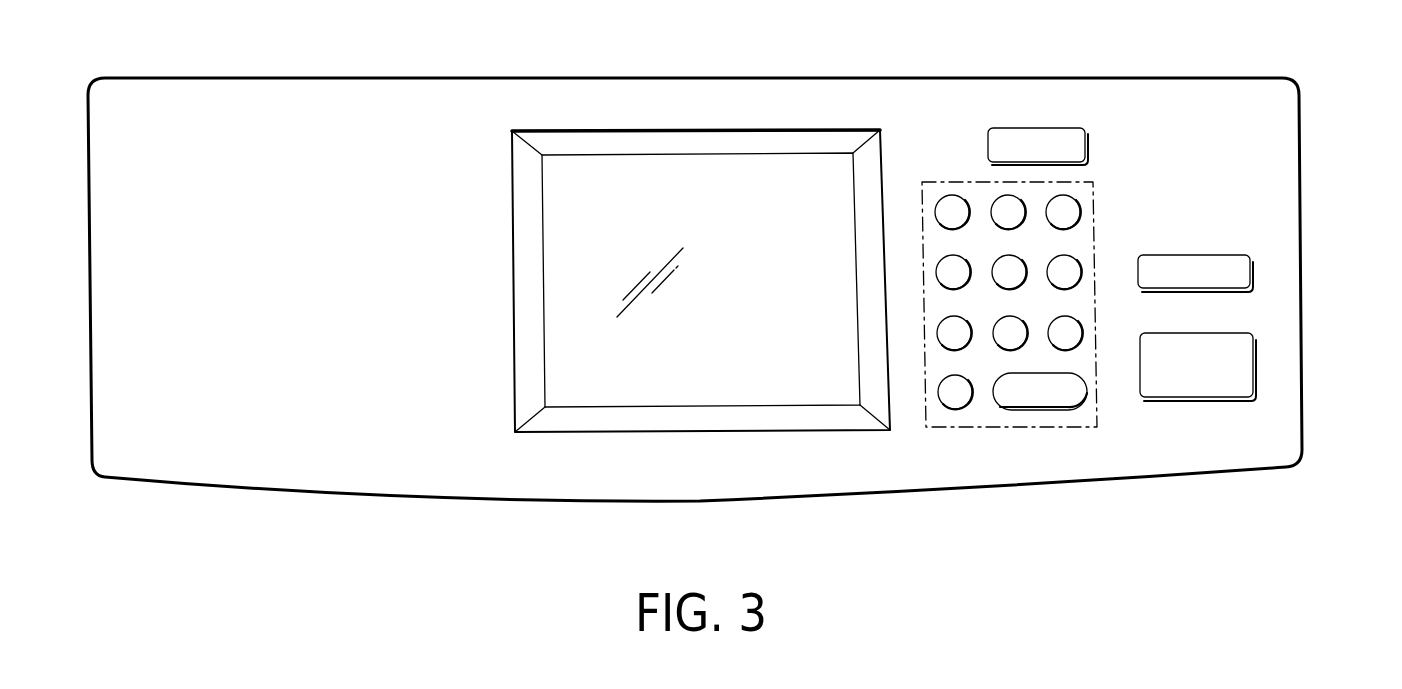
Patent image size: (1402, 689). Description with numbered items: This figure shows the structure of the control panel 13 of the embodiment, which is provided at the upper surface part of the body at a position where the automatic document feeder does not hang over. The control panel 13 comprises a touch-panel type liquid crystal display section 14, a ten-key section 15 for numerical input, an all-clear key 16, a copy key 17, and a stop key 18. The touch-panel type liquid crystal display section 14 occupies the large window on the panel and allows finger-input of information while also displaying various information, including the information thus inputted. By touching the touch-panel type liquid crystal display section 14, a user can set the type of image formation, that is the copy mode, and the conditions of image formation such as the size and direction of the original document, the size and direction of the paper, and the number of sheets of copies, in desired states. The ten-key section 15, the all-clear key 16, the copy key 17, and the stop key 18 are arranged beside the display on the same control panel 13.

The control panel 13 is at (780, 79).
The touch-panel type liquid crystal display section 14 is at (586, 170).
The ten-key section 15 is at (950, 182).
The all-clear key 16 is at (1045, 128).
The copy key 17 is at (1256, 364).
The stop key 18 is at (1253, 272).